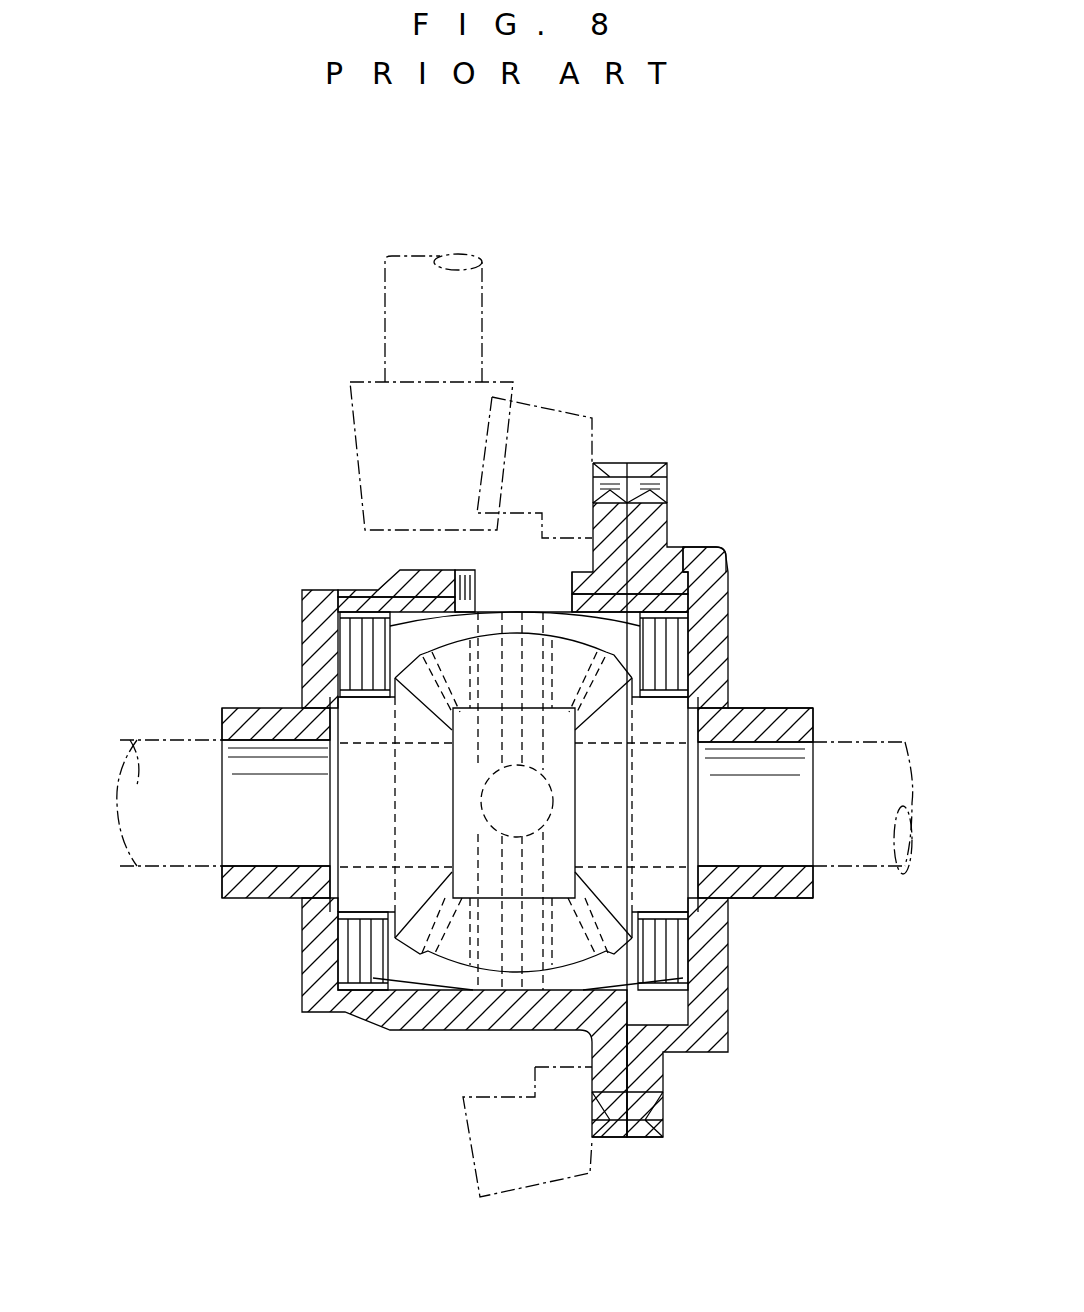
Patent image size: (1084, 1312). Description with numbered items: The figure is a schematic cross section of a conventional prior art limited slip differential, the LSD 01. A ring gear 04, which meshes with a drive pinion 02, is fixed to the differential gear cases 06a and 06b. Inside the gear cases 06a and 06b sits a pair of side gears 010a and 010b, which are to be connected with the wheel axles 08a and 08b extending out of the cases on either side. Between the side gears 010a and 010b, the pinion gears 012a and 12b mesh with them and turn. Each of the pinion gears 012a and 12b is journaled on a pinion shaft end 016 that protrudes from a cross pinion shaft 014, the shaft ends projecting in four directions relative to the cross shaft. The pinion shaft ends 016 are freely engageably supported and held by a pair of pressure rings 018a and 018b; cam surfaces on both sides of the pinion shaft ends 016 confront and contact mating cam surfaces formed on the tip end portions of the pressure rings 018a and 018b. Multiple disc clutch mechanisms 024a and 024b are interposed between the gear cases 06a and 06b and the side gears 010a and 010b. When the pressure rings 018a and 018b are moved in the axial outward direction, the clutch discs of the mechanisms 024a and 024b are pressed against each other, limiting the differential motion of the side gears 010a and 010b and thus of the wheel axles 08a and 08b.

The LSD 01 is at (788, 388).
The drive pinion 02 is at (508, 380).
The ring gear 04 is at (562, 400).
The differential gear case 06a is at (420, 1037).
The differential gear case 06b is at (728, 935).
The wheel axle 08a is at (153, 852).
The wheel axle 08b is at (878, 740).
The side gear 010a is at (400, 715).
The side gear 010b is at (630, 718).
The pinion gear 012a is at (450, 653).
The pinion gear 12b is at (457, 952).
The cross pinion shaft 014 is at (552, 796).
The pinion shaft end 016 is at (512, 632).
The pressure ring 018a is at (408, 632).
The pressure ring 018b is at (617, 627).
The multiple disc clutch mechanism 024a is at (340, 958).
The multiple disc clutch mechanism 024b is at (688, 950).